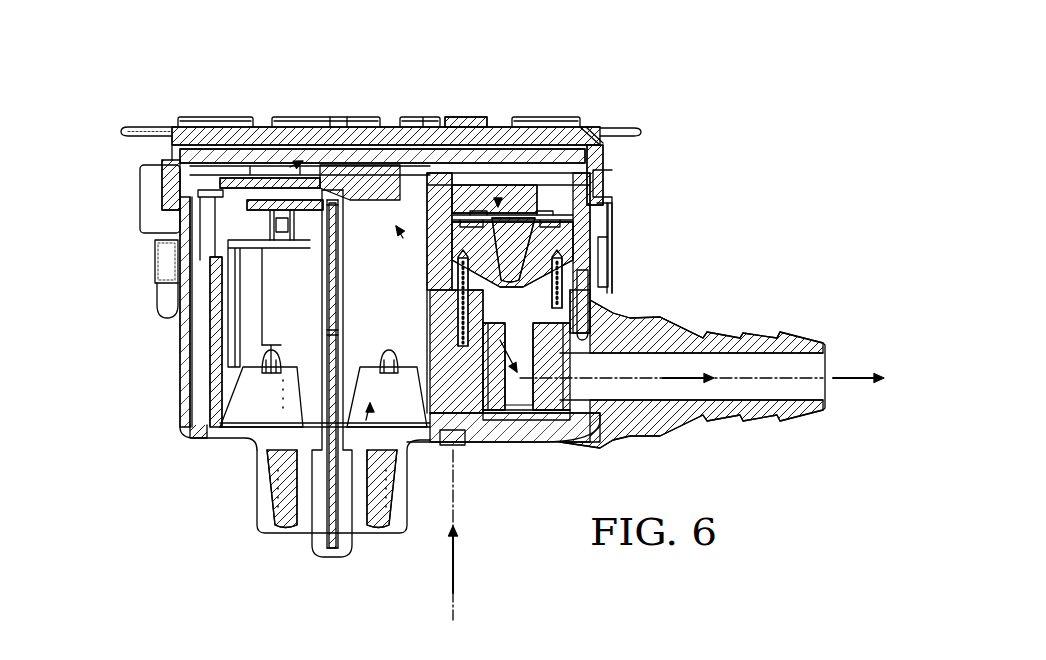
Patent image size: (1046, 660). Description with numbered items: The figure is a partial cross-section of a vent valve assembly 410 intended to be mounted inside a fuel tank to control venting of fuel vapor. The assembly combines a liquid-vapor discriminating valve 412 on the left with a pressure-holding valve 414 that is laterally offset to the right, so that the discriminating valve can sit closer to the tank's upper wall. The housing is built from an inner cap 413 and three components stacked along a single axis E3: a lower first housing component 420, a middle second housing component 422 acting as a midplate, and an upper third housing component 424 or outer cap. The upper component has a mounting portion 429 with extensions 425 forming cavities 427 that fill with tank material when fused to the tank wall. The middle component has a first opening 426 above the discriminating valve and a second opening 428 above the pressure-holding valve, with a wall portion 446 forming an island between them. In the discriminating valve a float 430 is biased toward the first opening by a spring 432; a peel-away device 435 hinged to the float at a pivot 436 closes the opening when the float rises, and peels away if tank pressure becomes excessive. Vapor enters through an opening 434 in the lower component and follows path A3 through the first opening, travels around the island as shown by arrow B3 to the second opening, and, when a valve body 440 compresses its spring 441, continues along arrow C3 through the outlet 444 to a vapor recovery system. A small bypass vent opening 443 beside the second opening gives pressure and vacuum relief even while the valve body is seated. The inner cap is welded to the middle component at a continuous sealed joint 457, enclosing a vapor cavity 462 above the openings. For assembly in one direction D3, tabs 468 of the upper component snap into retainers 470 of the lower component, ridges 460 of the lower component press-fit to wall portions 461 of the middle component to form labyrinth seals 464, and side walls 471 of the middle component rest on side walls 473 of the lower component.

The vent valve assembly 410 is at (470, 315).
The liquid-vapor discriminating valve 412 is at (386, 394).
The inner cap 413 is at (600, 140).
The pressure-holding valve 414 is at (645, 379).
The first housing component 420 is at (185, 385).
The second housing component 422 is at (603, 200).
The third housing component 424 is at (172, 128).
The extensions 425 is at (200, 128).
The first opening 426 is at (280, 170).
The cavities 427 is at (330, 128).
The second opening 428 is at (595, 128).
The mounting portion 429 is at (410, 128).
The float 430 is at (220, 432).
The spring 432 is at (272, 480).
The opening 434 is at (310, 535).
The peel-away device 435 is at (225, 318).
The pivot 436 is at (315, 268).
The valve body 440 is at (580, 222).
The spring 441 is at (560, 290).
The bypass vent opening 443 is at (575, 170).
The vent valve assembly outlet 444 is at (768, 400).
The wall portion 446 is at (345, 145).
The sealed joint 457 is at (405, 174).
The ridges 460 is at (445, 440).
The wall portions 461 is at (590, 318).
The vapor cavity 462 is at (215, 148).
The labyrinth seals 464 is at (601, 347).
The tabs 468 is at (163, 305).
The retainers 470 is at (153, 268).
The side walls 471 is at (223, 232).
The side walls 473 is at (253, 258).
The vapor flow path arrow A3 is at (392, 250).
The vapor flow arrow B3 is at (499, 200).
The vapor flow arrow C3 is at (485, 315).
The assembly direction D3 is at (454, 556).
The single axis E3 is at (454, 508).